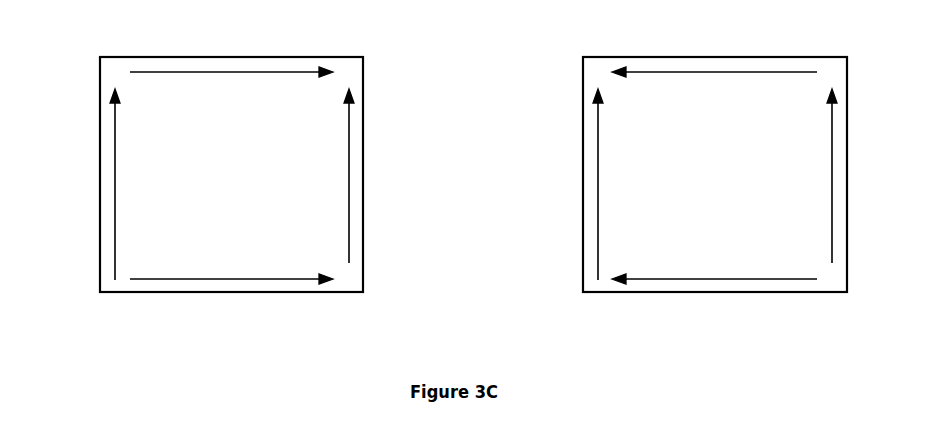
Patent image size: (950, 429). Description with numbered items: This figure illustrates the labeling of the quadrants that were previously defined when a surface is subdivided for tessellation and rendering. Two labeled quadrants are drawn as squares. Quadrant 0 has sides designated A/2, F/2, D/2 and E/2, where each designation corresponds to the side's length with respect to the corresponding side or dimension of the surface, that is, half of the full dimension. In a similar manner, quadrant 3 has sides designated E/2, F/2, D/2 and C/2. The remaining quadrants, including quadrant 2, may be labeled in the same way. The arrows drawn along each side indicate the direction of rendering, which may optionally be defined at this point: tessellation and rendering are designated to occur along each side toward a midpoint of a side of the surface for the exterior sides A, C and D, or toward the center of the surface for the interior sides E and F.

The quadrant 0 is at (231, 174).
The quadrant 3 is at (715, 174).
The quadrant 2 is at (461, 168).